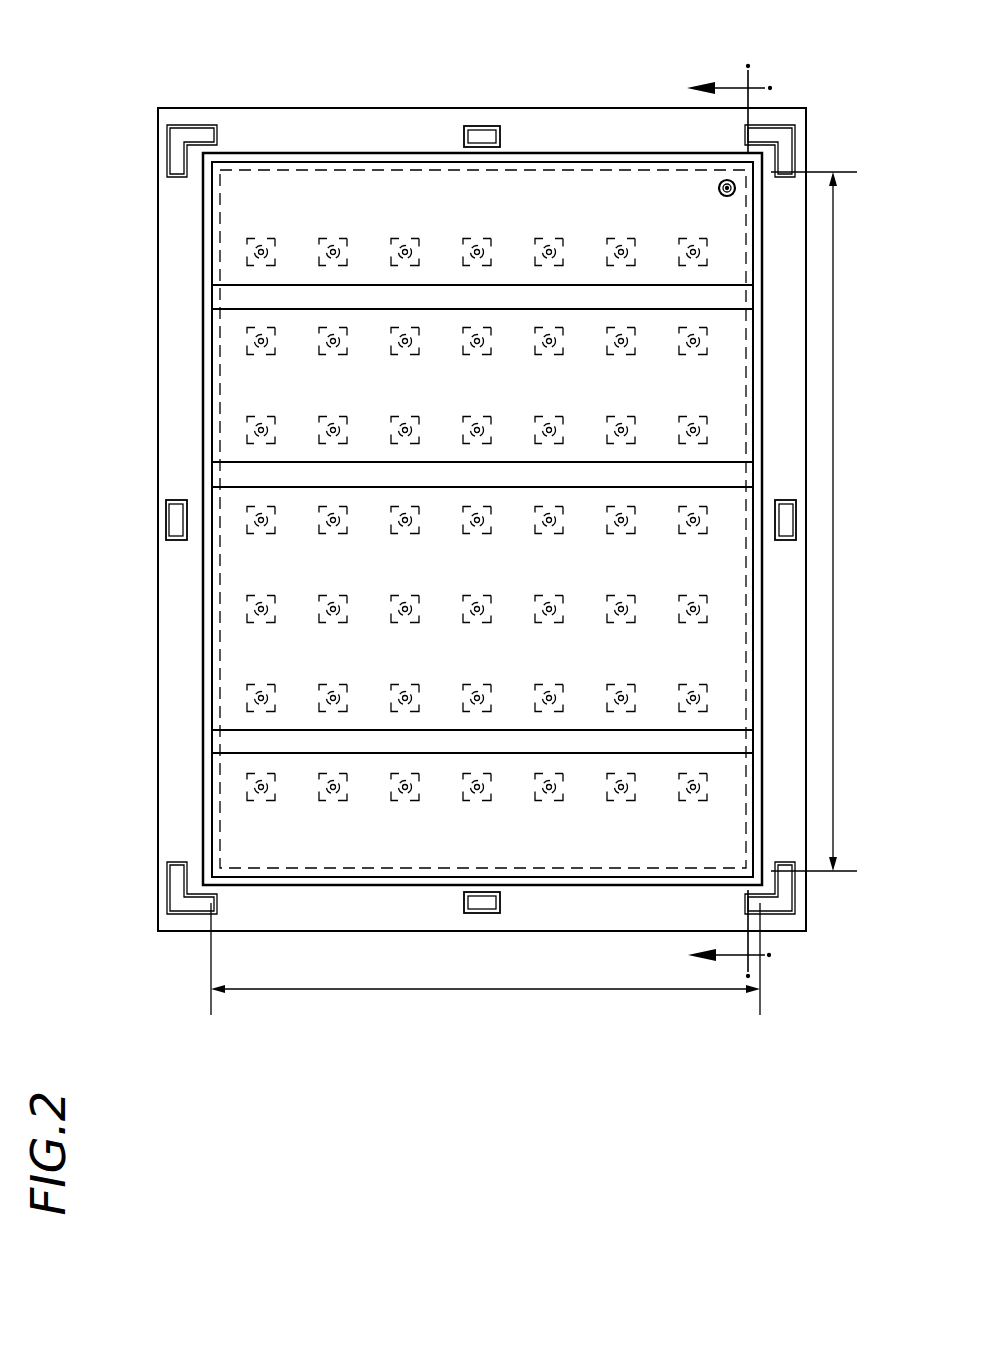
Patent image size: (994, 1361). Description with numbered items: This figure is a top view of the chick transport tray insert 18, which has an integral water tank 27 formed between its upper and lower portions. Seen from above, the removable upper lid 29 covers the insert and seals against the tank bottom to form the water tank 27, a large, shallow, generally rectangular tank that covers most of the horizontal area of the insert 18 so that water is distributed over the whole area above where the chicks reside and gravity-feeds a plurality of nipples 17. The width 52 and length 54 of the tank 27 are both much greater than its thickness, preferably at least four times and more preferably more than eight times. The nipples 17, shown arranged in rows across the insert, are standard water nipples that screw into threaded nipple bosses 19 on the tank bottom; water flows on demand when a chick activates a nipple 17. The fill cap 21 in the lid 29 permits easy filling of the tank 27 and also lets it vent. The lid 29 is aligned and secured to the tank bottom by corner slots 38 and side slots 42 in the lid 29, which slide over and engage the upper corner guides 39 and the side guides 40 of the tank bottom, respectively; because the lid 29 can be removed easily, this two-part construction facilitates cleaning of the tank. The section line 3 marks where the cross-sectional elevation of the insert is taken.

The tray insert 18 is at (120, 856).
The upper lid 29 is at (252, 108).
The upper corner guides 39 is at (193, 128).
The corner slots 38 is at (167, 150).
The side guides 40 is at (480, 128).
The side slots 42 is at (463, 138).
The water tank 27 is at (217, 413).
The nipples 17 is at (247, 607).
The nipple bosses 19 is at (253, 623).
The fill cap 21 is at (732, 197).
The section line 3- 3 is at (729, 521).
The width 52 is at (487, 989).
The length 54 is at (833, 518).